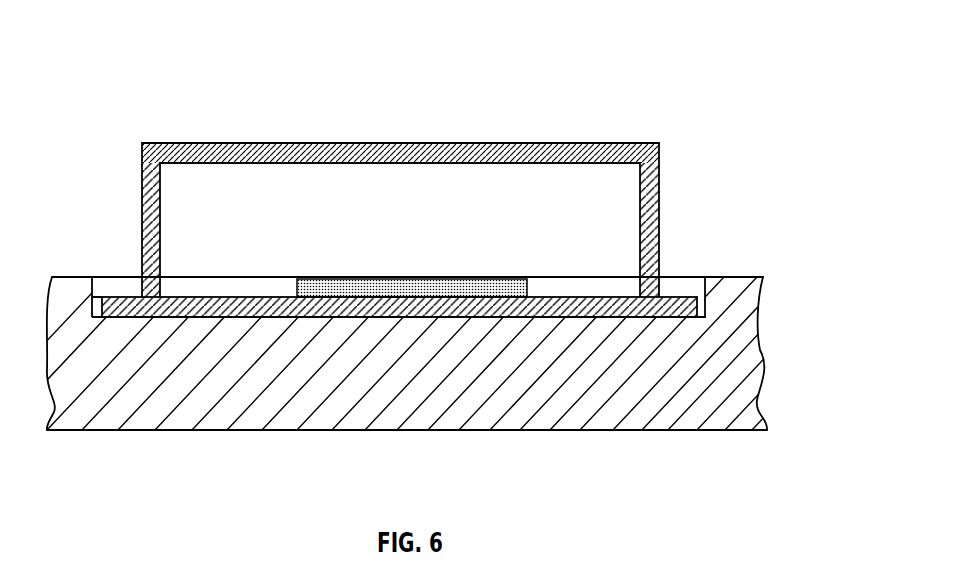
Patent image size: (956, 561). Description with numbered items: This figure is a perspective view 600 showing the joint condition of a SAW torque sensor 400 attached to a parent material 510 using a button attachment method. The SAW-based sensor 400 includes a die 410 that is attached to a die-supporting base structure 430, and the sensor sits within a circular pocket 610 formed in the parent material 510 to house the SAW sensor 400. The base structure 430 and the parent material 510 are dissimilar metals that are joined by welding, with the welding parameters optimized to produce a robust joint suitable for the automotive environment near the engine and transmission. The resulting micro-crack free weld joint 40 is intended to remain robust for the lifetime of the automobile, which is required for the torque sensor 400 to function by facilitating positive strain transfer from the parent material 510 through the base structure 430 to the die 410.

The micro-crack free weld joint 40 is at (95, 295).
The SAW-based sensor 400 is at (286, 116).
The die 410 is at (395, 283).
The die-supporting base structure 430 is at (693, 297).
The parent material 510 is at (752, 402).
The perspective view 600 is at (448, 220).
The circular pocket 610 is at (670, 287).